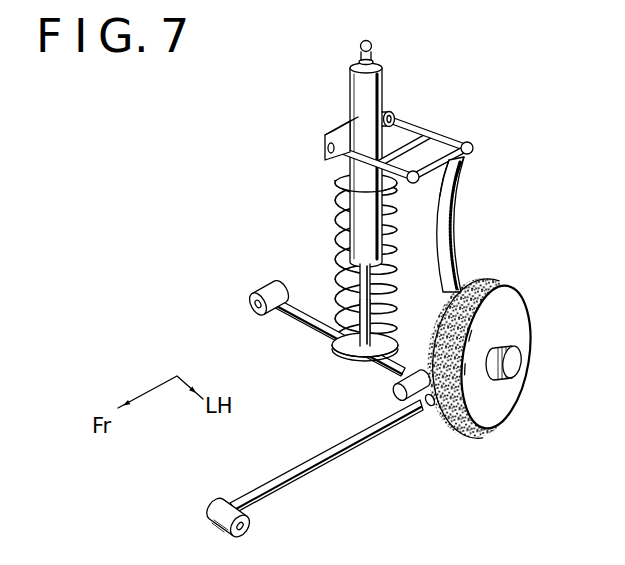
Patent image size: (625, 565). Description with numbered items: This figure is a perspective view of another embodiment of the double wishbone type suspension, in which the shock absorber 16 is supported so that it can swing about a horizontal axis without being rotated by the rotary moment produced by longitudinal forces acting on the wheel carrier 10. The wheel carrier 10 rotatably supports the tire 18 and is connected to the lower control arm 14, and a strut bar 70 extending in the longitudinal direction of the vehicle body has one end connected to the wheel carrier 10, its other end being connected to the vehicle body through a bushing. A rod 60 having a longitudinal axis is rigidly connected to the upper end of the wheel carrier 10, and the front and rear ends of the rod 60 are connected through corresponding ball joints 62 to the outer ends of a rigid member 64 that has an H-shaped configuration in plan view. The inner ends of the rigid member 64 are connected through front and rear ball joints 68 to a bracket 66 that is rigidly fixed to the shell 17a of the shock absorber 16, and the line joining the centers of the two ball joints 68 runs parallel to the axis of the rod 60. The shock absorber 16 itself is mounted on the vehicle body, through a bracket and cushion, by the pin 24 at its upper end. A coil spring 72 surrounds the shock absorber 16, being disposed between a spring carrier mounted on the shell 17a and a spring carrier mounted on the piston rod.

The wheel carrier 10 is at (455, 240).
The lower control arm 14 is at (296, 329).
The shock absorber 16 is at (345, 213).
The shell 17a is at (352, 178).
The tire 18 is at (500, 283).
The pin 24 is at (373, 48).
The rod 60 is at (466, 158).
The ball joints 62 is at (473, 147).
The rigid member 64 is at (449, 133).
The bracket 66 is at (340, 128).
The front and rear ball joints 68 is at (328, 146).
The strut bar 70 is at (342, 450).
The coil spring 72 is at (335, 247).